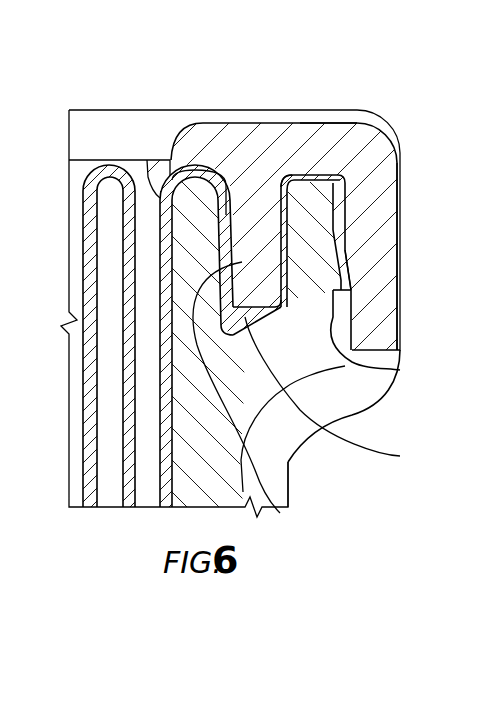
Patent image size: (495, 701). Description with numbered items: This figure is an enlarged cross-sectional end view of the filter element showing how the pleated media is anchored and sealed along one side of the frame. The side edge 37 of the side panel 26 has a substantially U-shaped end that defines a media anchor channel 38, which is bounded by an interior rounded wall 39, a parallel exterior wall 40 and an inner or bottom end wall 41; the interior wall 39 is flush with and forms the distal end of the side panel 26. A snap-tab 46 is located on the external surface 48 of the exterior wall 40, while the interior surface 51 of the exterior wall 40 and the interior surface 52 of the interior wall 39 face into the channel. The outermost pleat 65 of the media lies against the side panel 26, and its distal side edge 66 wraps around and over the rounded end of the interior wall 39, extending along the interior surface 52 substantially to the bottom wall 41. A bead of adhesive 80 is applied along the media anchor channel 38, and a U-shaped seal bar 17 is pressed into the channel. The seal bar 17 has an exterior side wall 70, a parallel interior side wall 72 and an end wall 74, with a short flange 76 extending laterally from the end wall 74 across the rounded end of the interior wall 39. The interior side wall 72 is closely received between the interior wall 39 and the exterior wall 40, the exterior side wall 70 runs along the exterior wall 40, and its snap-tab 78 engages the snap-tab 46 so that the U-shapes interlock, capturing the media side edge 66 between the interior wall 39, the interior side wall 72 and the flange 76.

The seal bar 17 is at (385, 126).
The side panel 26 is at (280, 513).
The side edge 37 is at (203, 168).
The media anchor channel 38 is at (318, 147).
The interior rounded wall 39 is at (225, 170).
The exterior wall 40 is at (357, 110).
The bottom end wall 41 is at (388, 404).
The snap-tab 46 is at (342, 268).
The external surface 48 is at (332, 212).
The interior surface 51 is at (283, 306).
The interior surface 52 is at (247, 250).
The outermost pleat 65 is at (147, 160).
The distal side edge 66 is at (289, 168).
The exterior side wall 70 is at (390, 222).
The interior side wall 72 is at (290, 463).
The end wall 74 is at (330, 128).
The flange 76 is at (197, 133).
The snap-tab 78 is at (400, 370).
The adhesive 80 is at (400, 456).